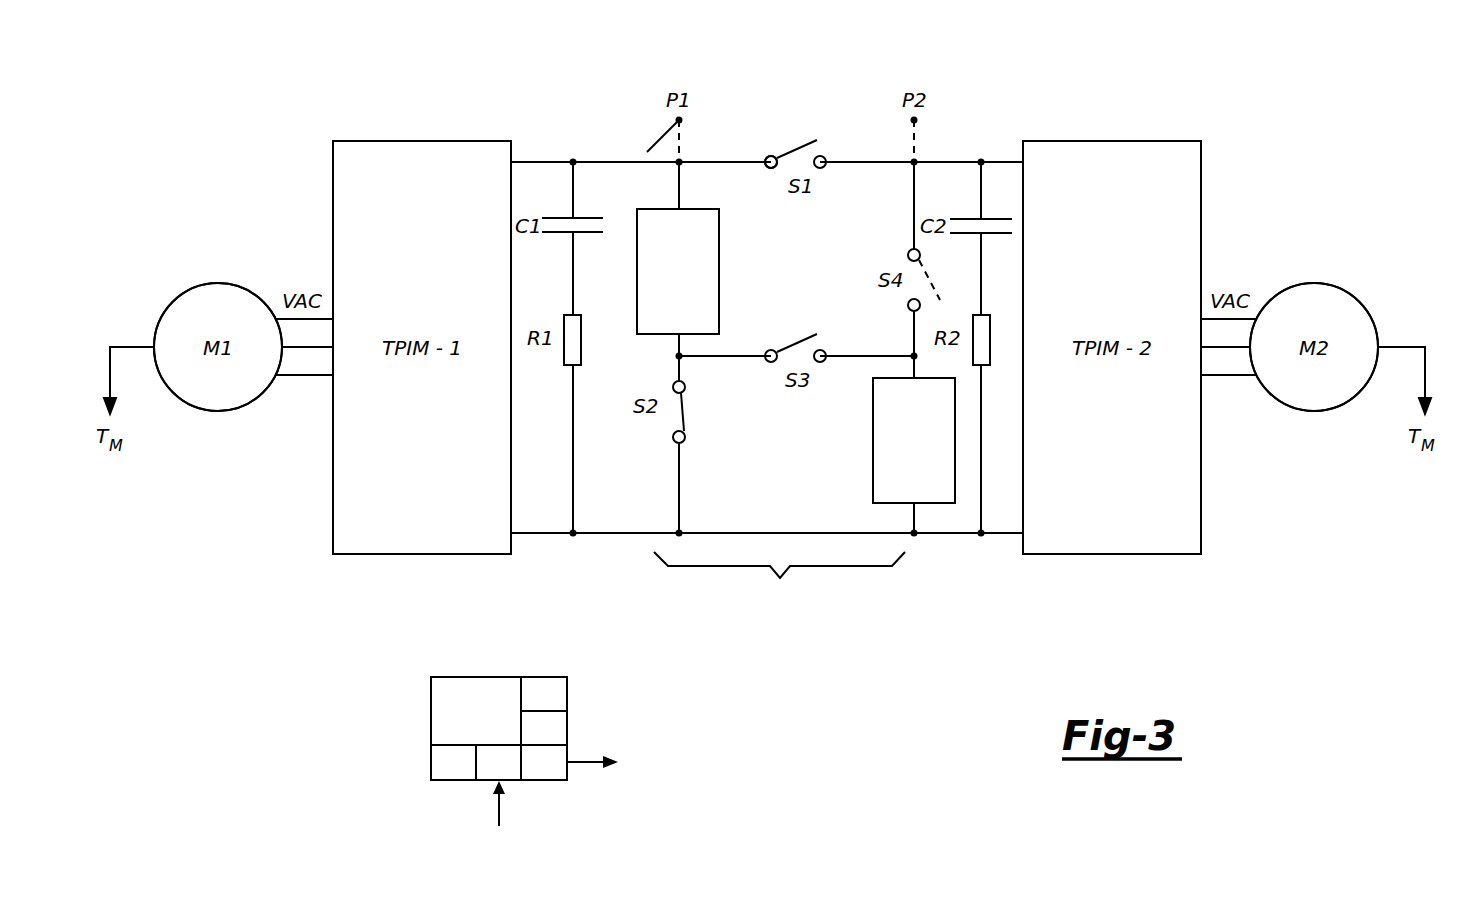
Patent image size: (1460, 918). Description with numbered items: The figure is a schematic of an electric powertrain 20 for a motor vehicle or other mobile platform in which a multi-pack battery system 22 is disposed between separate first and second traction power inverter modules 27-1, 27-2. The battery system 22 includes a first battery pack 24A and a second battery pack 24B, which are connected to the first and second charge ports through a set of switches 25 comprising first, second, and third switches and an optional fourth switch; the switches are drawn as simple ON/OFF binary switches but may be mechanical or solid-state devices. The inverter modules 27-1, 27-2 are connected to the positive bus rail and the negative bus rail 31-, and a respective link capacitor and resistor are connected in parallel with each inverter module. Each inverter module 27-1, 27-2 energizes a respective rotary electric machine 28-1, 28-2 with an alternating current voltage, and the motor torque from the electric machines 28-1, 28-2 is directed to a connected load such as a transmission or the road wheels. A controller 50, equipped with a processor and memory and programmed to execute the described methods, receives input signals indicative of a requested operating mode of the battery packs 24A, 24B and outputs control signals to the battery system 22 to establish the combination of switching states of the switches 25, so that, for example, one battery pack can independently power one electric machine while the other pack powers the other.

The electric powertrain 20 is at (1289, 88).
The battery system 22 is at (779, 583).
The first battery pack 24A is at (719, 270).
The second battery pack 24B is at (873, 440).
The switches 25 is at (784, 128).
The first traction power inverter module 27-1 is at (421, 554).
The second traction power inverter module 27-2 is at (1113, 555).
The first rotary electric machine 28-1 is at (215, 411).
The second rotary electric machine 28-2 is at (1315, 411).
The negative bus rail 31- is at (1001, 535).
The controller 50 is at (431, 730).